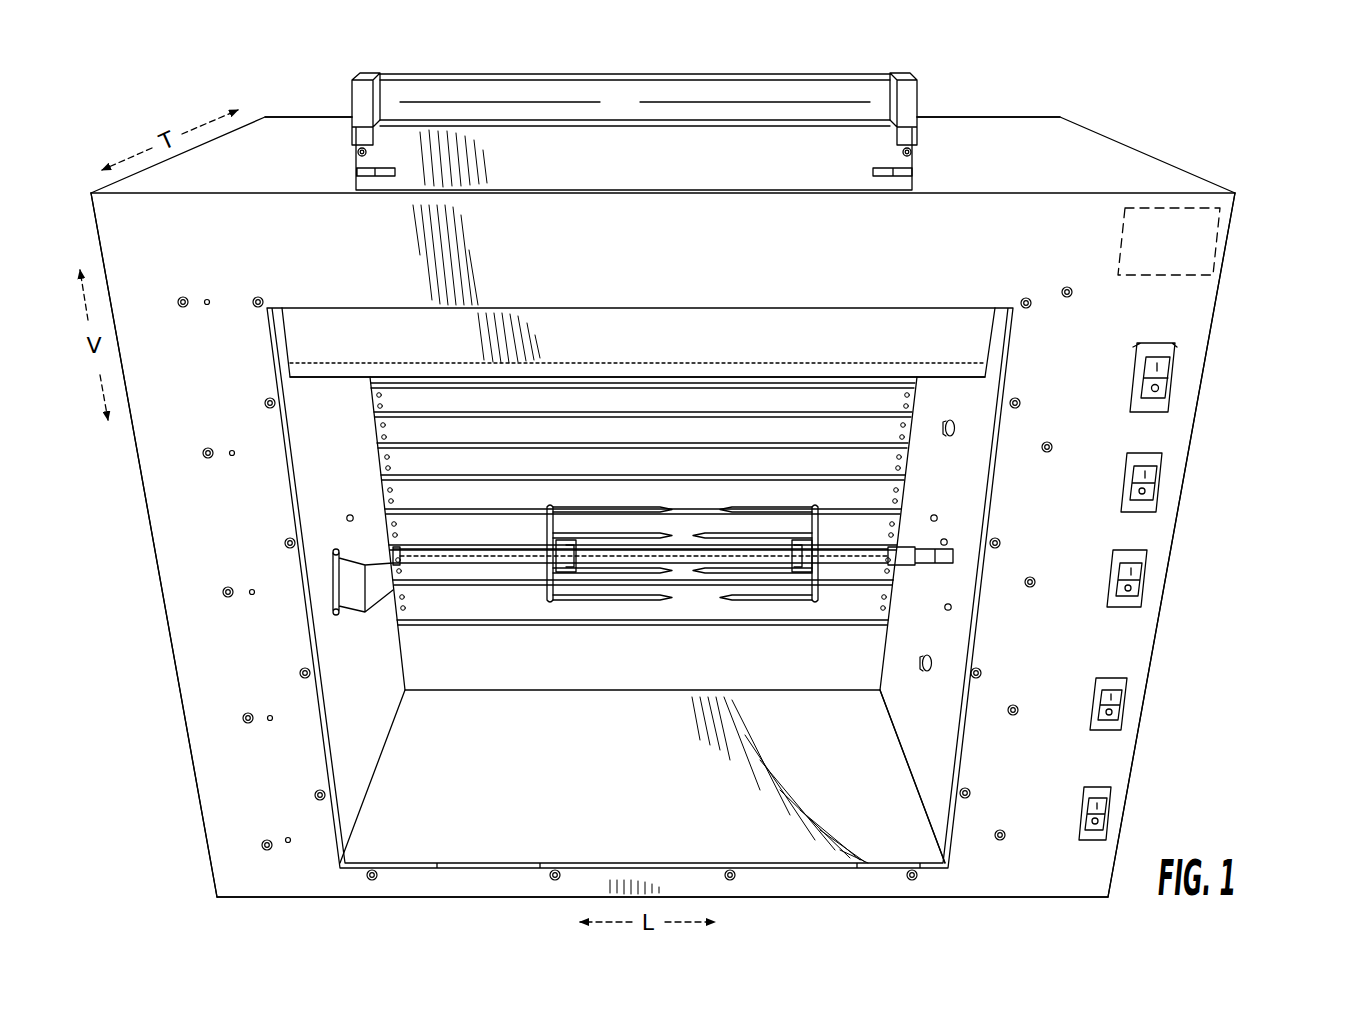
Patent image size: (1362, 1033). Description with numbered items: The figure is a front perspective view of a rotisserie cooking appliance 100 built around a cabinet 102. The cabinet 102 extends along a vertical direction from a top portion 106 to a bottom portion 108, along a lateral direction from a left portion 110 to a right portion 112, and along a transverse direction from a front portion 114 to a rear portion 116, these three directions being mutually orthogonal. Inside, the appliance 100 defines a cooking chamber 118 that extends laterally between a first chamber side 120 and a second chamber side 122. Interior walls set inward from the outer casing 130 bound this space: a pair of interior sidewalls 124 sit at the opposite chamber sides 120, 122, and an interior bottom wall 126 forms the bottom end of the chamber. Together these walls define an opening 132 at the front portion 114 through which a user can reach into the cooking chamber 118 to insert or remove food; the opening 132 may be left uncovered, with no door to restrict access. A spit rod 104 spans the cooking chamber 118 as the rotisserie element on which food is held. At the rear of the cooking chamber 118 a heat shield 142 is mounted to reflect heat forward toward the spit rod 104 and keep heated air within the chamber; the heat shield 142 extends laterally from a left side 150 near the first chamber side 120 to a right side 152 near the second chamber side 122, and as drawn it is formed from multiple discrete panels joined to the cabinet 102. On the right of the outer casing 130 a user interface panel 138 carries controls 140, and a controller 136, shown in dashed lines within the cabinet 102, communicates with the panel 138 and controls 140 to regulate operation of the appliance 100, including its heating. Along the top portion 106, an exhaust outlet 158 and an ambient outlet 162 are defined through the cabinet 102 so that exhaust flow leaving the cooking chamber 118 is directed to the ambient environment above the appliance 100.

The cooking appliance 100 is at (723, 491).
The cabinet 102 is at (723, 491).
The spit rod 104 is at (455, 565).
The top portion 106 is at (1038, 135).
The bottom portion 108 is at (362, 902).
The left portion 110 is at (180, 725).
The right portion 112 is at (1148, 705).
The front portion 114 is at (922, 228).
The rear portion 116 is at (302, 108).
The cooking chamber 118 is at (678, 533).
The first chamber side 120 is at (646, 627).
The second chamber side 122 is at (930, 750).
The interior sidewalls 124 is at (347, 715).
The interior bottom wall 126 is at (580, 800).
The outer casing 130 is at (175, 535).
The opening 132 is at (305, 643).
The controller 136 is at (1185, 208).
The user interface panel 138 is at (1088, 848).
The controls 140 is at (1170, 378).
The heat shield 142 is at (835, 435).
The left side 150 is at (375, 483).
The right side 152 is at (905, 505).
The exhaust outlet 158 is at (634, 110).
The ambient outlet 162 is at (808, 103).